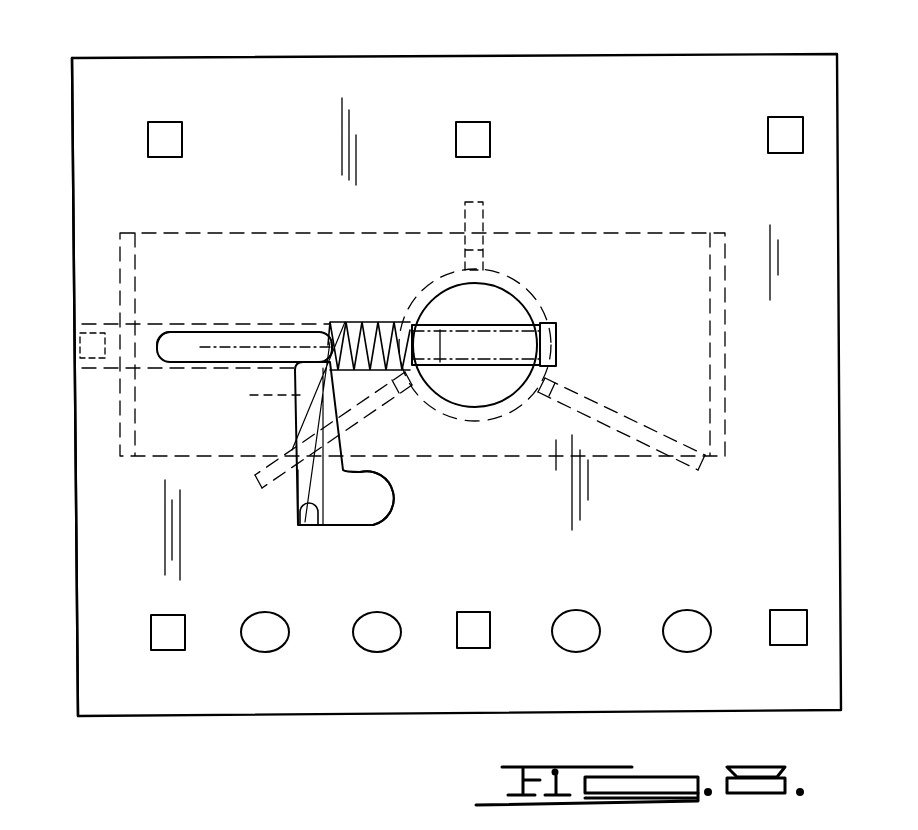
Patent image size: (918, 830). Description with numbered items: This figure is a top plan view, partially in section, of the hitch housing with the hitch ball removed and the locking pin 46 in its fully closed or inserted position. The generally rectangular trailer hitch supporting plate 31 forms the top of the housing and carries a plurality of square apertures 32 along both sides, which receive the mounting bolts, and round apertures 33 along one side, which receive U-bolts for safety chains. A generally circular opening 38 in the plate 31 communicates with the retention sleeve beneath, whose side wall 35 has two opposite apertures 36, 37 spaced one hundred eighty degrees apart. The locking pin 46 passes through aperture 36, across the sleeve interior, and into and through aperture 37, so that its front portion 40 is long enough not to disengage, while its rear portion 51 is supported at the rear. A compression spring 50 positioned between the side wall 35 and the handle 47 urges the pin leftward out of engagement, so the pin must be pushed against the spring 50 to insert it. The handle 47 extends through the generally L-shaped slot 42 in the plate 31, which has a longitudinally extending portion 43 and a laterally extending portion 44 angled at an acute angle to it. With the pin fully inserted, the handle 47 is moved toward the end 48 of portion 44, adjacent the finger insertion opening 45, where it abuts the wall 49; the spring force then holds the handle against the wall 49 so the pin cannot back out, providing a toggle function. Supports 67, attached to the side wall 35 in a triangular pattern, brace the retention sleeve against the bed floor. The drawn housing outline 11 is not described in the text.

The lock housing 11 is at (75, 466).
The trailer hitch supporting plate 31 is at (830, 520).
The square apertures 32 is at (165, 135).
The round apertures 33 is at (272, 648).
The side wall 35 is at (535, 288).
The aperture 36 is at (420, 328).
The aperture 37 is at (555, 328).
The circular opening 38 is at (452, 300).
The front portion of locking pin 40 is at (467, 395).
The slot 42 is at (165, 335).
The longitudinally extending portion 43 is at (205, 340).
The laterally extending portion 44 is at (345, 405).
The finger insertion opening 45 is at (372, 512).
The locking pin 46 is at (110, 332).
The handle 47 is at (300, 395).
The end of section 44 48 is at (348, 520).
The wall of section 44 49 is at (305, 495).
The compression spring 50 is at (348, 322).
The rear portion of locking pin 51 is at (80, 348).
The supports 67 is at (480, 212).